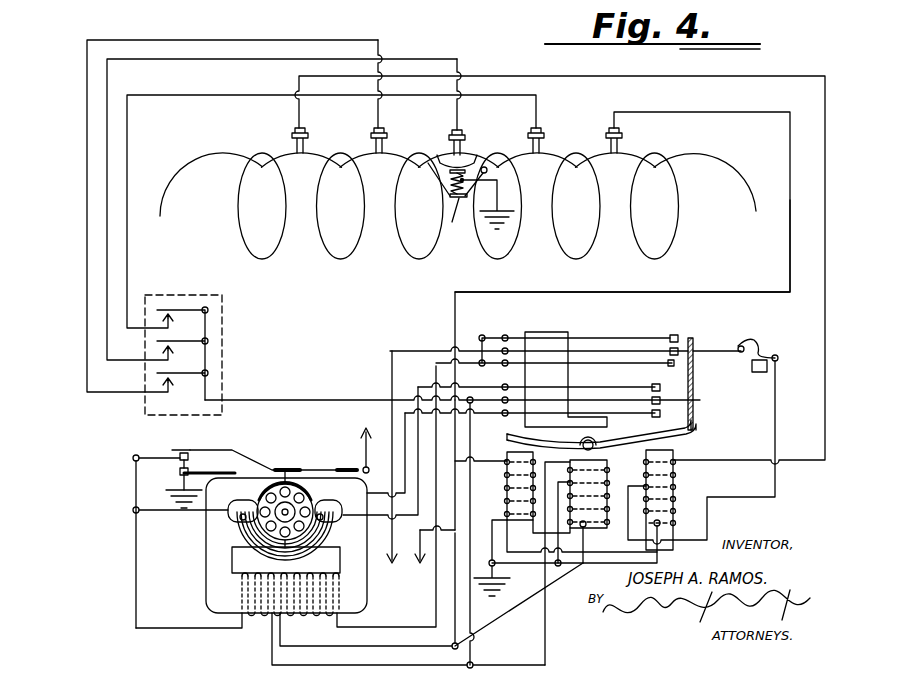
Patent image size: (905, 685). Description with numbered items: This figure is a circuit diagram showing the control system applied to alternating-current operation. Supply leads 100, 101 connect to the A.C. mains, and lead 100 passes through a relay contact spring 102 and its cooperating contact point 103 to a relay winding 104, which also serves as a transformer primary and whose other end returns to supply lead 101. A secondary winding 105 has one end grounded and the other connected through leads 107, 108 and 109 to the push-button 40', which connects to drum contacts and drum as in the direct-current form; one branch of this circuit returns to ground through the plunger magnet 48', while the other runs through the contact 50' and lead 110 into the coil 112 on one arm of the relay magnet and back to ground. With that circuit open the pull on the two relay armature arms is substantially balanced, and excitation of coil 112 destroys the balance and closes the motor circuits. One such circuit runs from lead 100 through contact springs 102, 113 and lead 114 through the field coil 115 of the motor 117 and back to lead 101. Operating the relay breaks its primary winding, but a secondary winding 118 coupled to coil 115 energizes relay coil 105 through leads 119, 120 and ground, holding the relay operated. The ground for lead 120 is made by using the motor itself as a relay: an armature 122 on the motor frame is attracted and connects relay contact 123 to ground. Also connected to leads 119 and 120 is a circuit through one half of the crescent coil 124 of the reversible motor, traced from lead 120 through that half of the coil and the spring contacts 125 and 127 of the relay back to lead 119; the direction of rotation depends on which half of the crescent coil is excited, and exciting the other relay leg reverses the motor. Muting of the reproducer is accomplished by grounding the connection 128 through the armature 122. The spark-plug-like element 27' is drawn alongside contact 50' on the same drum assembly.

The spark plug 27' is at (554, 141).
The contact 50' is at (622, 202).
The plunger magnet 48' is at (471, 201).
The lead 110 is at (790, 253).
The push-button 40' is at (183, 345).
The lead 109 is at (296, 395).
The connection 128 is at (366, 433).
The relay contact 123 is at (192, 460).
The armature 122 is at (300, 465).
The crescent coil 124 is at (240, 521).
The motor 117 is at (206, 569).
The lead 120 is at (136, 617).
The secondary winding 118 is at (258, 618).
The field coil 115 is at (302, 618).
The lead 119 is at (268, 668).
The supply lead 100 is at (394, 564).
The supply lead 101 is at (419, 566).
The lead 108 is at (470, 594).
The lead 107 is at (548, 630).
The lead 114 is at (438, 528).
The coil 112 is at (507, 490).
The relay winding 104 is at (600, 526).
The secondary winding 105 is at (610, 458).
The contact spring 113 is at (600, 341).
The spring contact 125 is at (628, 388).
The spring contact 127 is at (700, 400).
The relay contact spring 102 is at (582, 346).
The contact point 103 is at (760, 359).